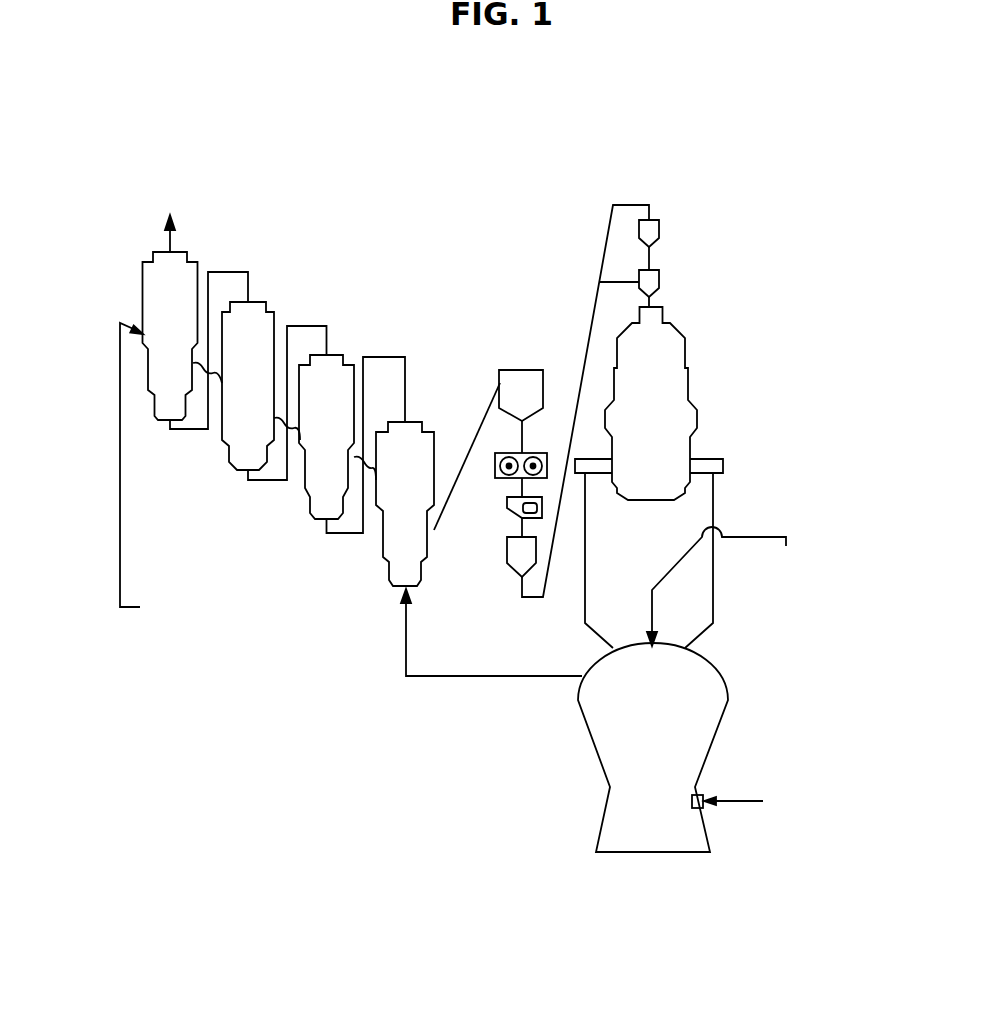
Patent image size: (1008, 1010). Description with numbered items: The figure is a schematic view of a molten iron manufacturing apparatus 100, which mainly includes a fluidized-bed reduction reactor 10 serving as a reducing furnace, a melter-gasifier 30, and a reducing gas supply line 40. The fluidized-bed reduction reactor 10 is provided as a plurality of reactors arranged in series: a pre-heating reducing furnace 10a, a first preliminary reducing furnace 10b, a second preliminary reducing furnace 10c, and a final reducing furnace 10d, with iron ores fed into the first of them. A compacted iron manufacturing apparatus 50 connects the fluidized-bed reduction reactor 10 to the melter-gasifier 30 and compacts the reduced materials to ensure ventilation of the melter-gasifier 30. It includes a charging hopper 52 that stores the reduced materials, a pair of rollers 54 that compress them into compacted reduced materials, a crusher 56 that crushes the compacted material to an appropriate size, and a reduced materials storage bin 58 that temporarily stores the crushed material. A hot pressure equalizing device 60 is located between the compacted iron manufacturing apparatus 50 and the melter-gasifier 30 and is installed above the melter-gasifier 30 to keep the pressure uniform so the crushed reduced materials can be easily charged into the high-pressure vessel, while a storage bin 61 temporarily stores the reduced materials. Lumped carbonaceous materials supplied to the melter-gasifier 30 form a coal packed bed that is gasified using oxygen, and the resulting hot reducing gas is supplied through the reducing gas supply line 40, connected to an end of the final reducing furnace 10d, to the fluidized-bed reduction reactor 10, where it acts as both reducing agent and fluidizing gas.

The molten iron manufacturing apparatus 100 is at (528, 124).
The fluidized-bed reduction reactor 10 is at (338, 236).
The pre-heating reducing furnace 10a is at (183, 252).
The first preliminary reducing furnace 10b is at (258, 302).
The second preliminary reducing furnace 10c is at (339, 355).
The final reducing furnace 10d is at (418, 422).
The melter-gasifier 30 is at (695, 853).
The reducing gas supply line 40 is at (520, 676).
The compacted iron manufacturing apparatus 50 is at (538, 325).
The charging hopper 52 is at (503, 370).
The pair of rollers 54 is at (543, 453).
The crusher 56 is at (507, 511).
The reduced materials storage bin 58 is at (507, 558).
The hot pressure equalizing device 60 is at (660, 240).
The storage bin 61 is at (686, 345).